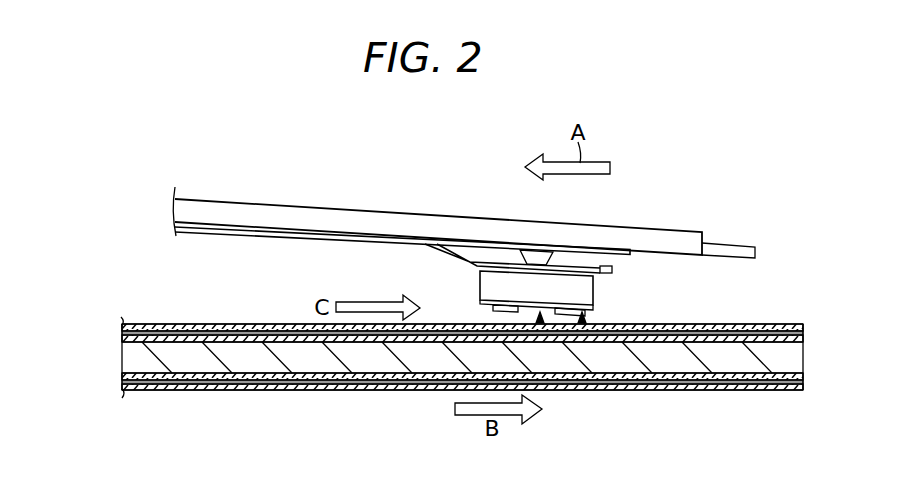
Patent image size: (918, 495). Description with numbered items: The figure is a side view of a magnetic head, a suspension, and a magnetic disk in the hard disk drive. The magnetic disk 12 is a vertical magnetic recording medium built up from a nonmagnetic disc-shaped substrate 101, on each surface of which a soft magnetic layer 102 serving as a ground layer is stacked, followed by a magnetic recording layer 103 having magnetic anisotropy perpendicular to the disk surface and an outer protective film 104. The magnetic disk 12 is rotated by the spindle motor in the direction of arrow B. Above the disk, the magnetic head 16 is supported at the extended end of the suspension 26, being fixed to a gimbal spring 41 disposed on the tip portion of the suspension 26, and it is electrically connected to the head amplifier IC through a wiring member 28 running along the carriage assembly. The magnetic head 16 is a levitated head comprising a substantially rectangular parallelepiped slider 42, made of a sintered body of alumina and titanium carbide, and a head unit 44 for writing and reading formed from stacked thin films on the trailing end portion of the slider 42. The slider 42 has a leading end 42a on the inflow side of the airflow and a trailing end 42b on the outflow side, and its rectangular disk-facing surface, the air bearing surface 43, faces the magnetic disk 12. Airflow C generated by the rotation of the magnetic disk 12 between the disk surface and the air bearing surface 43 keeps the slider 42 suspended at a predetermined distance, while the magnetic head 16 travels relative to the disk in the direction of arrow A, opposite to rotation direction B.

The magnetic disk 12 is at (155, 308).
The magnetic head 16 is at (468, 288).
The suspension 26 is at (294, 207).
The wiring member 28 is at (228, 233).
The gimbal spring 41 is at (505, 262).
The slider 42 is at (562, 278).
The leading end 42a is at (476, 277).
The trailing end 42b is at (593, 293).
The disk-facing surface (air bearing surface) 43 is at (540, 323).
The head unit 44 is at (582, 323).
The substrate 101 is at (217, 363).
The soft magnetic layer 102 is at (118, 344).
The magnetic recording layer 103 is at (189, 331).
The protective film 104 is at (130, 323).